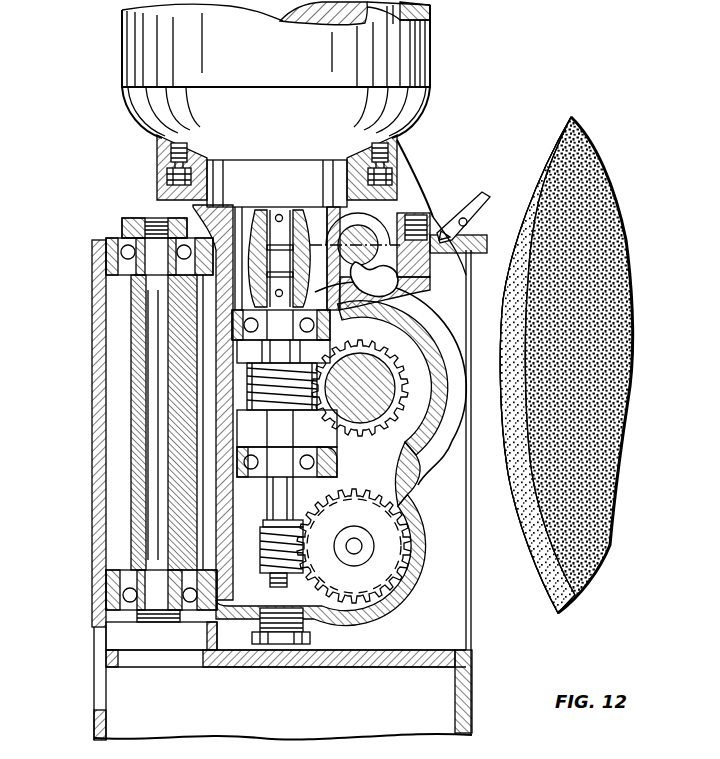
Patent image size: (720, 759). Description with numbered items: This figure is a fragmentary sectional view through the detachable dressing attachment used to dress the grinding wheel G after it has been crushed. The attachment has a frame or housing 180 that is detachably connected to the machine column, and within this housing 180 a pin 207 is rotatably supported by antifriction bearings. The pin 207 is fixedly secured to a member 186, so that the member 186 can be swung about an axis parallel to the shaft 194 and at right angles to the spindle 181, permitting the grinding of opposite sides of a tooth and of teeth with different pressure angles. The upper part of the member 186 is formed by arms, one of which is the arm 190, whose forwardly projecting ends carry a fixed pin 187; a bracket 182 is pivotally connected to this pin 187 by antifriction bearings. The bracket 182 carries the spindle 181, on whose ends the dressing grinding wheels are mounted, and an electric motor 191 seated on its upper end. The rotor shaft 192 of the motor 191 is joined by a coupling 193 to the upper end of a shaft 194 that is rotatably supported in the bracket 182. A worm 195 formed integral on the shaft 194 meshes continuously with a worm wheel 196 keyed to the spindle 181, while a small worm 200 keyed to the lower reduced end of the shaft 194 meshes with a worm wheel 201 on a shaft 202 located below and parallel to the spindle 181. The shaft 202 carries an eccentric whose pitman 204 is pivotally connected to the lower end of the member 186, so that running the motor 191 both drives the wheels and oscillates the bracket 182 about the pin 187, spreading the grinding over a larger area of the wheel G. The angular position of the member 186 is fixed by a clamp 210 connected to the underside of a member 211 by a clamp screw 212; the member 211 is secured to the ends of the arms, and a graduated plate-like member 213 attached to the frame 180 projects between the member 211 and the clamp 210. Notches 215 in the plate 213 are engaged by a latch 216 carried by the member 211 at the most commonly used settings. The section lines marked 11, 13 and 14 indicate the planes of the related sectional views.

The electric motor 191 is at (430, 40).
The rotor shaft 192 is at (268, 192).
The coupling 193 is at (325, 207).
The arm 190 is at (192, 207).
The pin 187 is at (418, 200).
The member 211 is at (425, 205).
The clamp screw 212 is at (428, 212).
The clamp 210 is at (425, 278).
The plate-like member 213 is at (462, 255).
The notches 215 is at (468, 282).
The latch 216 is at (470, 195).
The section line 11 is at (335, 291).
The frame 180 is at (104, 359).
The member 186 is at (133, 400).
The pin 207 is at (152, 441).
The section line 14 is at (558, 388).
The section line 13 is at (452, 548).
The shaft 194 is at (281, 285).
The worm 195 is at (259, 418).
The worm wheel 196 is at (393, 346).
The spindle 181 is at (341, 439).
The worm wheel 201 is at (421, 506).
The bracket 182 is at (447, 470).
The pitman 204 is at (227, 543).
The small worm 200 is at (257, 582).
The shaft 202 is at (356, 560).
The grinding wheel G is at (590, 524).